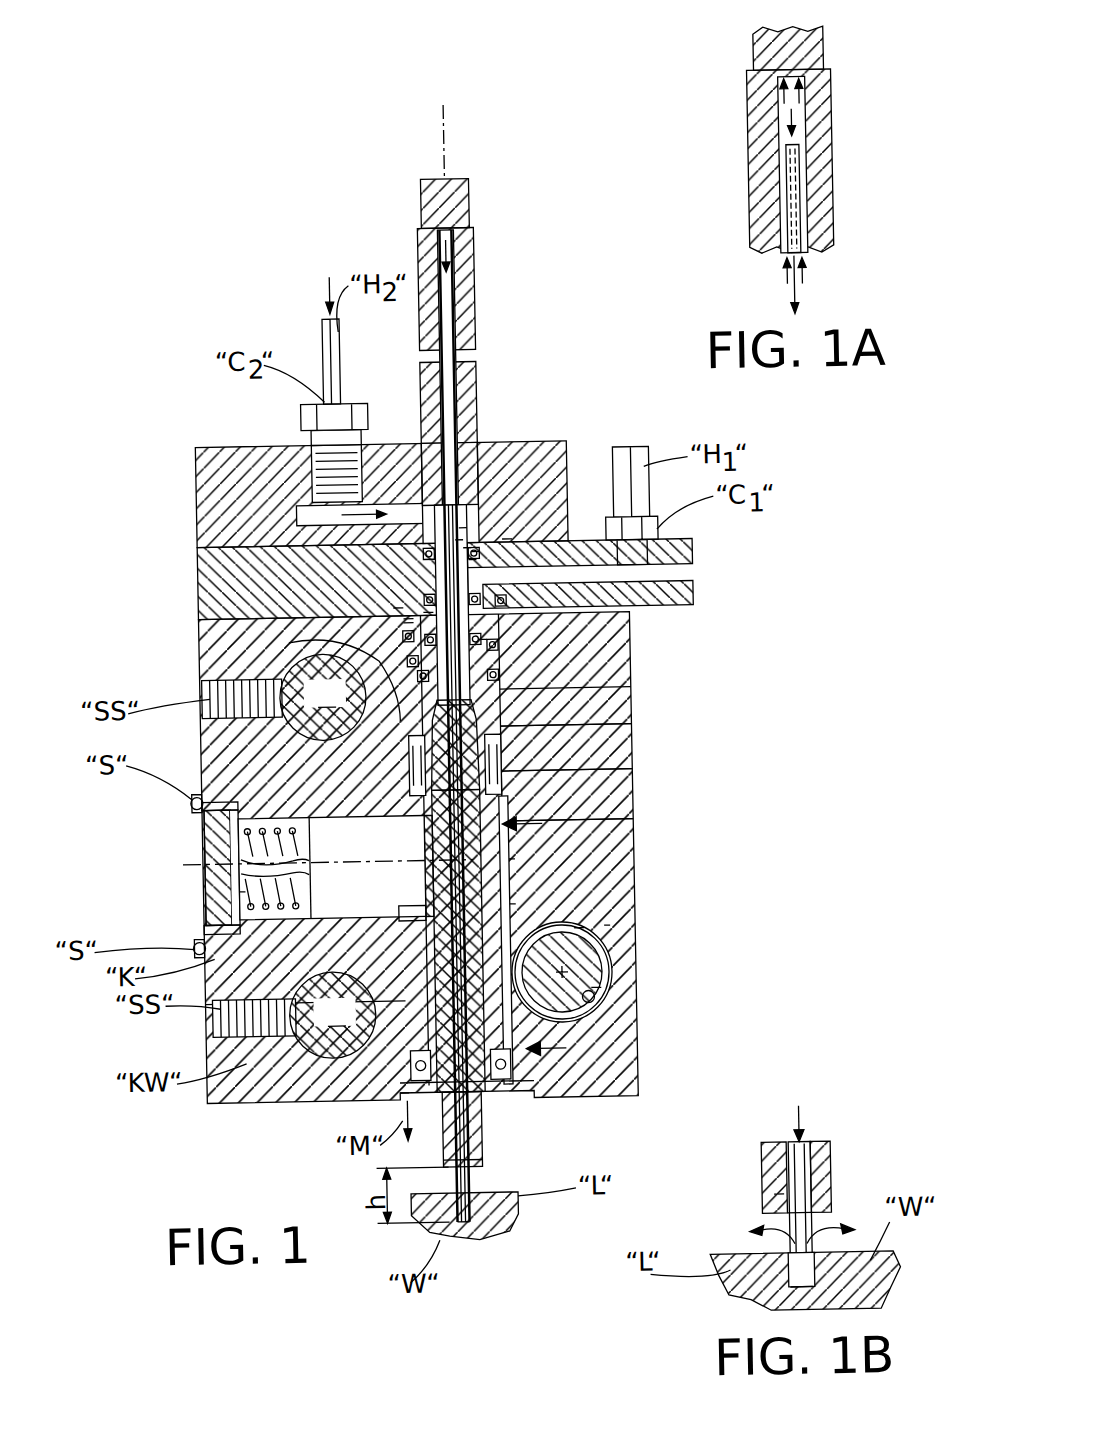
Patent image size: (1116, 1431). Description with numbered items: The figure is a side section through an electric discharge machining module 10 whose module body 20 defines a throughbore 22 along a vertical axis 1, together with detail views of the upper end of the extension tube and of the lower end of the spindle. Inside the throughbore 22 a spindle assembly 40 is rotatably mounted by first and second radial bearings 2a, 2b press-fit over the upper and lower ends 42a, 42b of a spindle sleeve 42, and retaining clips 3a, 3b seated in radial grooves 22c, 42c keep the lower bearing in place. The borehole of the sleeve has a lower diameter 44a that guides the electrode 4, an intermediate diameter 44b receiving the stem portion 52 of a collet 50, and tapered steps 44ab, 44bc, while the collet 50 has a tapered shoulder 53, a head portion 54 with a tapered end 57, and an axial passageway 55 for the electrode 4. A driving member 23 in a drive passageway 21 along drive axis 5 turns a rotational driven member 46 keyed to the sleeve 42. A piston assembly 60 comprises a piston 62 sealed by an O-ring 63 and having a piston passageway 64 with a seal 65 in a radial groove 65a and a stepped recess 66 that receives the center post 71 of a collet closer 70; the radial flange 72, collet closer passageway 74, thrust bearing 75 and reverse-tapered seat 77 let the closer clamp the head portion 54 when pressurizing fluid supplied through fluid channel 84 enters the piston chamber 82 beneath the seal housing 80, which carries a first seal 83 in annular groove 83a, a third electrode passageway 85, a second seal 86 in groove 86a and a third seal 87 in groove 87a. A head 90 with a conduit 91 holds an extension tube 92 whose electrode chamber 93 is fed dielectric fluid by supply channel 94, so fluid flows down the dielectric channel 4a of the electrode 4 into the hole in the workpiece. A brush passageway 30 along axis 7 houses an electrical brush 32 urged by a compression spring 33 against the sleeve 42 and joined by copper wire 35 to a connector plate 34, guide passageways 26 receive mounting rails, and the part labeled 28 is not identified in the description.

In FIG. 1, the axis 1 is at (455, 121).
In FIG. 1, the first radial bearing 2a is at (432, 771).
In FIG. 1, the second radial bearing 2b is at (560, 1050).
In FIG. 1, the retaining clip 3a is at (420, 1085).
In FIG. 1, the retaining clip 3b is at (423, 1133).
In FIG. 1, the electrode 4 is at (462, 1238).
In FIG. 1A, the electrode 4 is at (810, 180).
In FIG. 1B, the electrode 4 is at (810, 1210).
In FIG. 1A, the dielectric channel 4a is at (800, 215).
In FIG. 1B, the dielectric channel 4a is at (750, 1240).
In FIG. 1, the drive axis 5 is at (605, 930).
In FIG. 1, the brush passageway axis 7 is at (220, 835).
In FIG. 1, the electric discharge machining module 10 is at (150, 553).
In FIG. 1, the module body 20 is at (195, 655).
In FIG. 1, the drive passageway 21 is at (590, 990).
In FIG. 1, the throughbore 22 is at (600, 878).
In FIG. 1, the radial groove 22c is at (380, 1095).
In FIG. 1, the driving member 23 is at (597, 975).
In FIG. 1, the guide passageways 26 is at (280, 710).
In FIG. 1, the holder 28 is at (520, 735).
In FIG. 1, the brush passageway 30 is at (240, 870).
In FIG. 1, the electrical brush 32 is at (380, 898).
In FIG. 1, the compression spring 33 is at (235, 890).
In FIG. 1, the connector plate 34 is at (205, 812).
In FIG. 1, the copper wire 35 is at (215, 840).
In FIG. 1, the spindle assembly 40 is at (540, 825).
In FIG. 1, the spindle sleeve 42 is at (507, 815).
In FIG. 1B, the spindle sleeve 42 is at (825, 1160).
In FIG. 1, the upper end of spindle sleeve 42a is at (520, 736).
In FIG. 1, the lower end of spindle sleeve 42b is at (472, 1152).
In FIG. 1B, the lower end of spindle sleeve 42b is at (780, 1226).
In FIG. 1, the radial groove 42c is at (480, 1094).
In FIG. 1, the lower diameter 44a is at (507, 920).
In FIG. 1B, the lower diameter 44a is at (765, 1185).
In FIG. 1, the tapered step 44ab is at (507, 905).
In FIG. 1, the intermediate diameter 44b is at (422, 840).
In FIG. 1, the tapered step 44bc is at (507, 780).
In FIG. 1, the rotational driven member 46 is at (575, 935).
In FIG. 1, the collet 50 is at (500, 746).
In FIG. 1, the stem portion 52 is at (400, 770).
In FIG. 1, the tapered shoulder 53 is at (408, 750).
In FIG. 1, the head portion 54 is at (520, 765).
In FIG. 1, the axial passageway 55 is at (395, 913).
In FIG. 1, the tapered end 57 is at (500, 700).
In FIG. 1, the piston assembly 60 is at (482, 680).
In FIG. 1, the piston 62 is at (410, 625).
In FIG. 1, the O-ring 63 is at (400, 610).
In FIG. 1, the piston passageway 64 is at (482, 643).
In FIG. 1, the seal 65 is at (450, 610).
In FIG. 1, the second radial groove 65a is at (440, 615).
In FIG. 1, the stepped recess 66 is at (410, 620).
In FIG. 1, the collet closer 70 is at (380, 730).
In FIG. 1, the center post 71 is at (430, 615).
In FIG. 1, the radial flange 72 is at (380, 660).
In FIG. 1, the collet closer passageway 74 is at (482, 662).
In FIG. 1, the thrust bearing 75 is at (482, 653).
In FIG. 1, the reverse-tapered seat 77 is at (420, 680).
In FIG. 1, the seal housing 80 is at (660, 597).
In FIG. 1, the piston chamber 82 is at (515, 604).
In FIG. 1, the first seal 83 is at (484, 640).
In FIG. 1, the annular groove 83a is at (510, 540).
In FIG. 1, the pressurizing fluid channel 84 is at (695, 562).
In FIG. 1, the third electrode passageway 85 is at (470, 548).
In FIG. 1, the second seal 86 is at (478, 552).
In FIG. 1, the first radial groove 86a is at (475, 560).
In FIG. 1, the third seal 87 is at (462, 540).
In FIG. 1, the second radial groove 87a is at (466, 528).
In FIG. 1, the head 90 is at (228, 425).
In FIG. 1, the conduit 91 is at (395, 440).
In FIG. 1, the extension tube 92 is at (480, 183).
In FIG. 1A, the extension tube 92 is at (830, 90).
In FIG. 1, the electrode chamber 93 is at (455, 245).
In FIG. 1A, the electrode chamber 93 is at (790, 118).
In FIG. 1, the dielectric fluid supply channel 94 is at (305, 505).